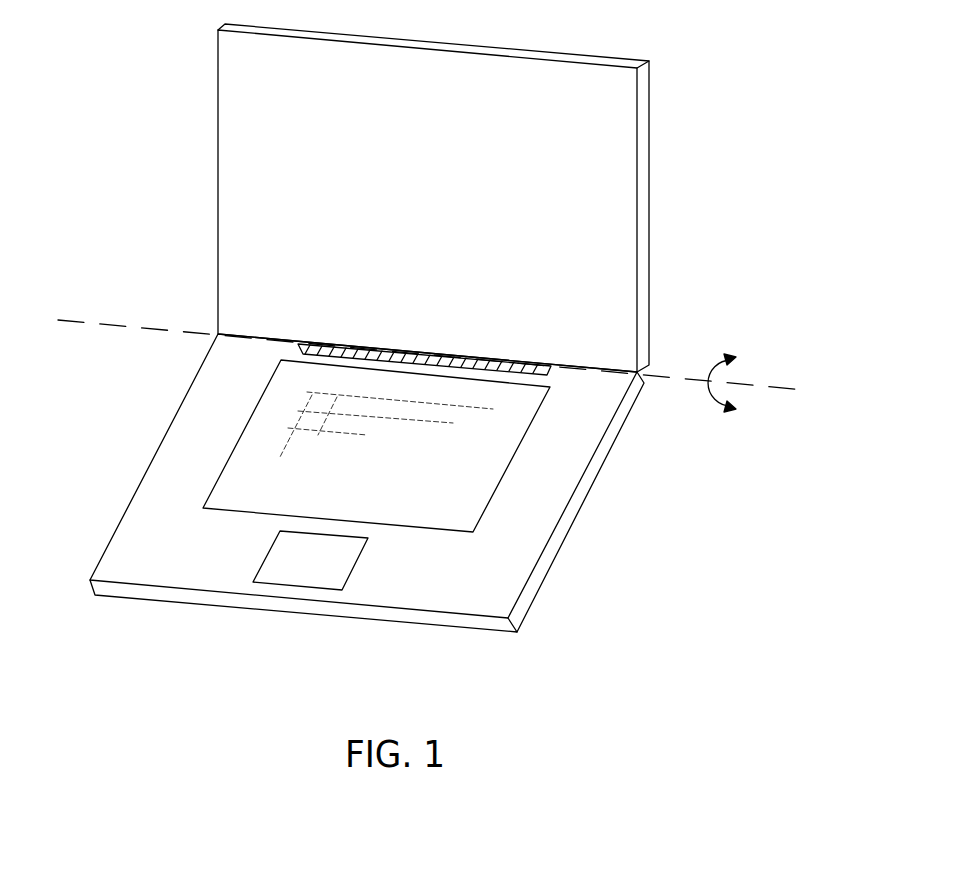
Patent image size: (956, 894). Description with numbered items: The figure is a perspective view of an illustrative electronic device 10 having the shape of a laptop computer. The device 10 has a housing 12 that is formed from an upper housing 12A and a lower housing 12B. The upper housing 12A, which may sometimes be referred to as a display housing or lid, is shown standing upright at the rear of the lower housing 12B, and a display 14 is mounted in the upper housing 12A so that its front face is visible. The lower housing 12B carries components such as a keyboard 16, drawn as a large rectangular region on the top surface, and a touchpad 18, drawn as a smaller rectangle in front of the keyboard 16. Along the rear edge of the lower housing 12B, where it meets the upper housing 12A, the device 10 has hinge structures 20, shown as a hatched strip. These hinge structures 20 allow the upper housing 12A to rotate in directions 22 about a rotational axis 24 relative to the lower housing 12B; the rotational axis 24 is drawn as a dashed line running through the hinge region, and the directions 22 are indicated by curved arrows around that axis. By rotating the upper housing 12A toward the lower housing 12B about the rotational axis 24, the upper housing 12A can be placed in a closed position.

The electronic device 10 is at (716, 60).
The housing 12 is at (650, 312).
The upper housing 12A is at (205, 31).
The lower housing 12B is at (197, 343).
The display 14 is at (565, 190).
The keyboard 16 is at (509, 465).
The touchpad 18 is at (353, 567).
The hinge structures 20 is at (522, 362).
The directions 22 is at (712, 408).
The rotational axis 24 is at (103, 325).